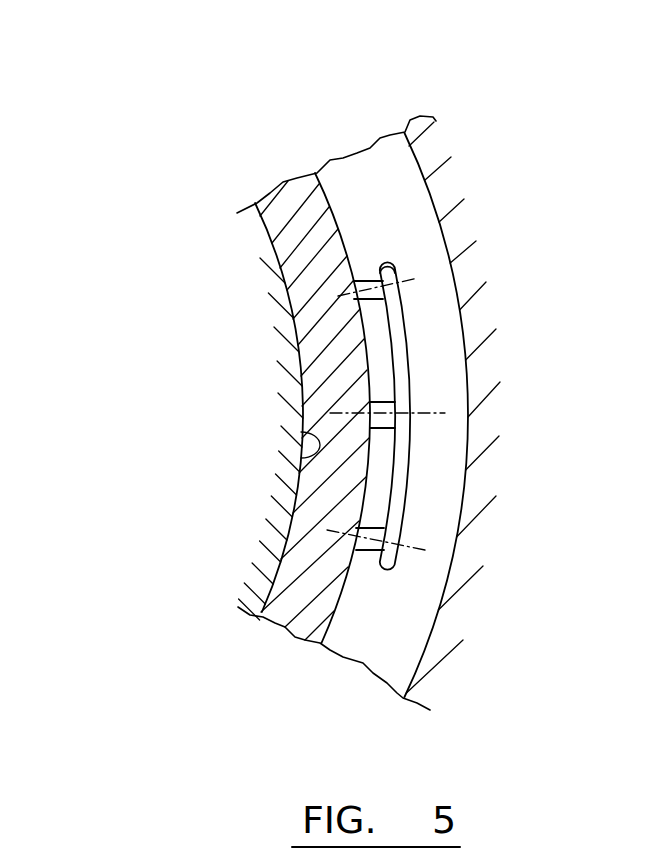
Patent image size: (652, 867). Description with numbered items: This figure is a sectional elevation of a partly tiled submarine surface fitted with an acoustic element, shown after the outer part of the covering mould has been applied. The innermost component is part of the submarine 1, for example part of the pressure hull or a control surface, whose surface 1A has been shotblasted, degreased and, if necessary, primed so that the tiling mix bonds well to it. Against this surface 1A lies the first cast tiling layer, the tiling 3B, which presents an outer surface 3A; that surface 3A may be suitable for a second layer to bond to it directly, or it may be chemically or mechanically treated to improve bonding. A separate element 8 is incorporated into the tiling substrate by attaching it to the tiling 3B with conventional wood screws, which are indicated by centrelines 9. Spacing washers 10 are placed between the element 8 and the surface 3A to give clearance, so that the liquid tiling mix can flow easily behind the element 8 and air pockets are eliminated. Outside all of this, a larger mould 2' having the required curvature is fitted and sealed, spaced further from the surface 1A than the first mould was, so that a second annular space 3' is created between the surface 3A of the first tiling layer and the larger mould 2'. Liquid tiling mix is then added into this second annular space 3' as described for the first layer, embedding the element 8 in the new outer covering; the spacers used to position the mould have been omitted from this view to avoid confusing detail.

The submarine 1 is at (285, 292).
The surface of submarine 1A is at (300, 458).
The larger mould 2' is at (525, 425).
The second annular space 3' is at (455, 367).
The surface of first cast tiling layer 3A is at (332, 193).
The tiling 3B is at (287, 207).
The separate element 8 is at (398, 340).
The centrelines 9 is at (422, 274).
The spacing washers 10 is at (362, 279).